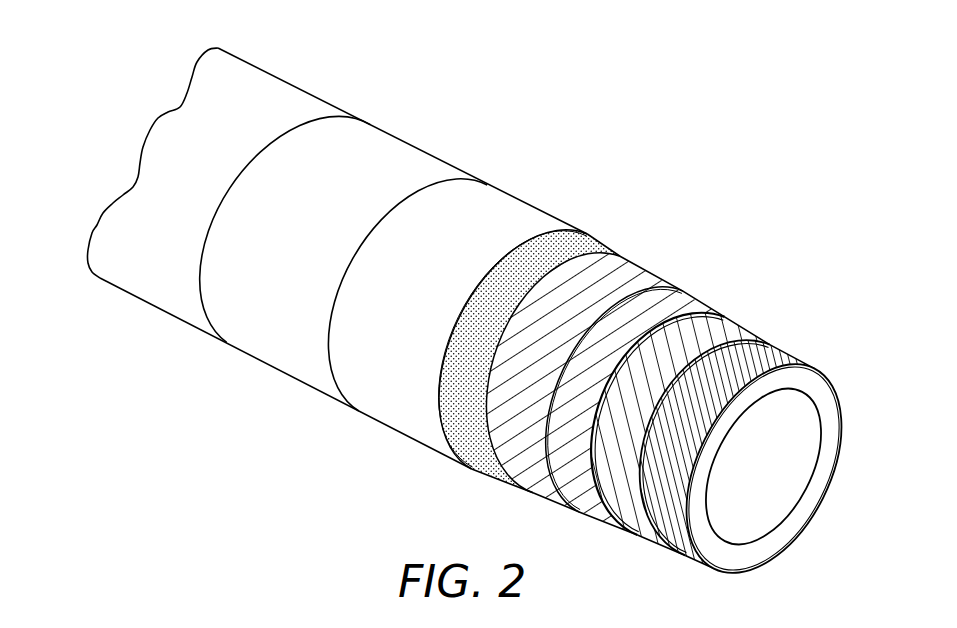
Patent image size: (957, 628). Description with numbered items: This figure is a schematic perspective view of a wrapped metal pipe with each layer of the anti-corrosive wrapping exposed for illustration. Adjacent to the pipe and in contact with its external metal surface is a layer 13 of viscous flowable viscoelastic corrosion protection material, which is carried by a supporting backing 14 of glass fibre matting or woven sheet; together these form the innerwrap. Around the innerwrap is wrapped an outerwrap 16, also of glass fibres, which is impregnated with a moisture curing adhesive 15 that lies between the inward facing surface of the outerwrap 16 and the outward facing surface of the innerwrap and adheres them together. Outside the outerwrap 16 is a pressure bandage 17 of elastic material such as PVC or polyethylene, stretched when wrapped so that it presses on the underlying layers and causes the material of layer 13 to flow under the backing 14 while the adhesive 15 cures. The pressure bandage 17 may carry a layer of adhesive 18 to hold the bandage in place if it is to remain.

The layer of viscous flowable material 13 is at (770, 357).
The supporting backing 14 is at (727, 330).
The adhesive 15 is at (675, 300).
The outerwrap 16 is at (628, 273).
The pressure bandage 17 is at (420, 163).
The layer of adhesive 18 is at (578, 248).